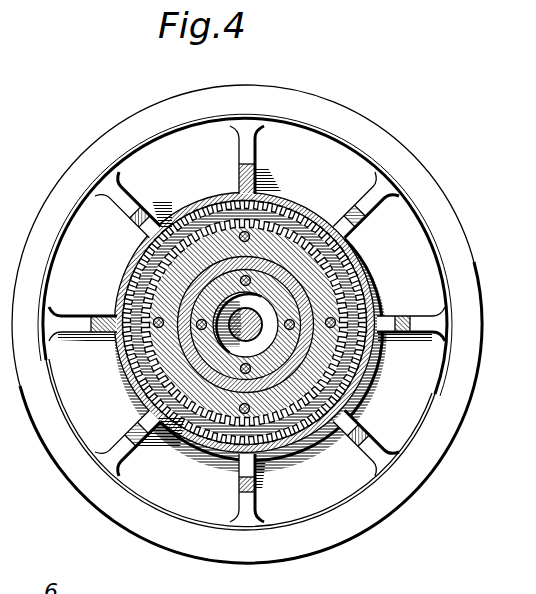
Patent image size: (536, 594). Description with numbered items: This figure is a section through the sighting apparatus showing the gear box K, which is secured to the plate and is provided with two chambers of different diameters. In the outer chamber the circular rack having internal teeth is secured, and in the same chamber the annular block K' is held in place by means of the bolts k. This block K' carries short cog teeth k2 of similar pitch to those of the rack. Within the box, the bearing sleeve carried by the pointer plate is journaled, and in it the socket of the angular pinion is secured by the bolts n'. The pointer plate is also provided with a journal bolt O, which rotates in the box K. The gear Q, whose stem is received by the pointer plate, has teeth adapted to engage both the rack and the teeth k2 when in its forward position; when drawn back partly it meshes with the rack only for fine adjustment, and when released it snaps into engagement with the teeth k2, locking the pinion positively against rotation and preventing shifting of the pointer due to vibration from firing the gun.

The gear box K is at (247, 339).
The bolts k is at (182, 214).
The short cog teeth k2 is at (160, 273).
The annular block K' is at (188, 325).
The bolts n' is at (248, 320).
The journal bolt O is at (267, 335).
The gear Q is at (258, 456).